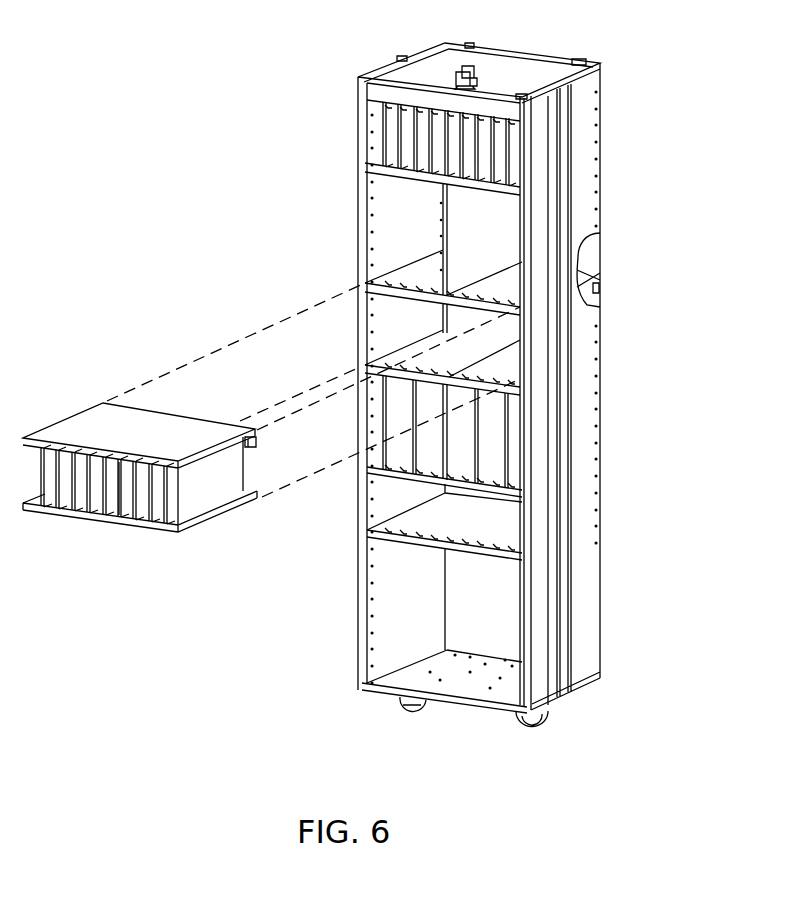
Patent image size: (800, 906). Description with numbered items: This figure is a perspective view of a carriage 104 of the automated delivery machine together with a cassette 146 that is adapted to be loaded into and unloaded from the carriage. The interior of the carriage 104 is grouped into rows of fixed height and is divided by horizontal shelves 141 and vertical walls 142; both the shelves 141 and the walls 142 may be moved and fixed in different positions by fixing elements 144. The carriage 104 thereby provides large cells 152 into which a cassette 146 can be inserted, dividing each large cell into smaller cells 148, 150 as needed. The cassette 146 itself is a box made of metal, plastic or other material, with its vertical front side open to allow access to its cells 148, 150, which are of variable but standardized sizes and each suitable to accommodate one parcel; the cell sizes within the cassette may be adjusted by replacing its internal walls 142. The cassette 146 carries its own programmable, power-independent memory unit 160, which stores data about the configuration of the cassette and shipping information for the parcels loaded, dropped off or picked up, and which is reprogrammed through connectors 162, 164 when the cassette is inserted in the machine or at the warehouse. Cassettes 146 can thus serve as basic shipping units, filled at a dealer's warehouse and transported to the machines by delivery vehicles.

The carriage 104 is at (518, 409).
The horizontal shelves 141 is at (387, 287).
The vertical walls 142 is at (130, 490).
The fixing elements 144 is at (450, 683).
The cassette 146 is at (179, 453).
The cell 148 is at (122, 478).
The cell 150 is at (155, 507).
The large cells 152 is at (487, 597).
The programmable memory unit 160 is at (248, 447).
The connector 162 is at (258, 439).
The connector 164 is at (603, 283).